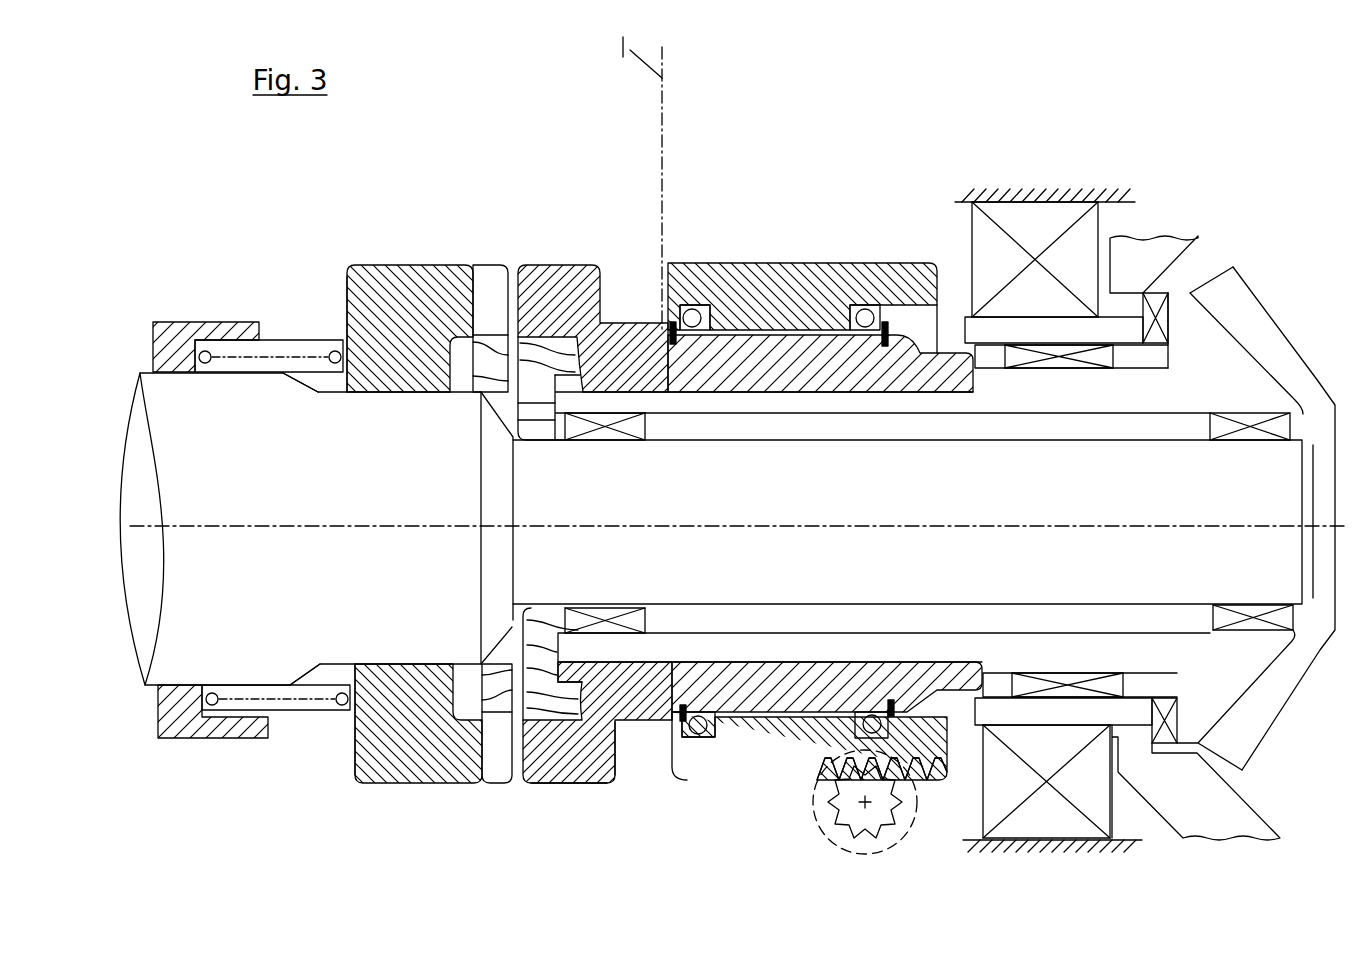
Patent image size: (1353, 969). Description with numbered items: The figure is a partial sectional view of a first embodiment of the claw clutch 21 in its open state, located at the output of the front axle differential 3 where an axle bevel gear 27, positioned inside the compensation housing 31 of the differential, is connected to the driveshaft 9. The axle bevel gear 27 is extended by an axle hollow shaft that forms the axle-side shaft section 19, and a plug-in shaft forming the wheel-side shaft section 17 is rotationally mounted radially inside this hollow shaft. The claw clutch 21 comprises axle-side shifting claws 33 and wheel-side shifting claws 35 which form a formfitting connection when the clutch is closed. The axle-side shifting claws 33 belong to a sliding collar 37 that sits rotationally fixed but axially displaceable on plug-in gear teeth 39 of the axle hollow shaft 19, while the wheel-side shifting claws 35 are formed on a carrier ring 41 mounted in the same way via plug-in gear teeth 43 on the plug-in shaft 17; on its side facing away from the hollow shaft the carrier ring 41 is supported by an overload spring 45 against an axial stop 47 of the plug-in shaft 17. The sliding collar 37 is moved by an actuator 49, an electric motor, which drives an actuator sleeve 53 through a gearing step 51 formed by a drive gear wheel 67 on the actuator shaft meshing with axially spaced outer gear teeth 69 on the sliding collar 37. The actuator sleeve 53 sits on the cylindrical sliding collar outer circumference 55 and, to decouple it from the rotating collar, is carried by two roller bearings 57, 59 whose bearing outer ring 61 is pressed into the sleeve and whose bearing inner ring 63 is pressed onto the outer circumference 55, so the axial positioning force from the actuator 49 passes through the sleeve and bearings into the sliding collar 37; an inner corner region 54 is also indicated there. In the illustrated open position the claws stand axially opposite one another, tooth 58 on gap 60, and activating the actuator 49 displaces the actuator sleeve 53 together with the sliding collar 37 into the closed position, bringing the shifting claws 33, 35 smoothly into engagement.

The front axle differential 3 is at (1345, 186).
The driveshaft of the front axle 9 is at (617, 108).
The wheel-side shaft section 17 is at (386, 460).
The axle-side shaft section 19 is at (650, 405).
The claw clutch 21 is at (470, 196).
The axle bevel gear 27 is at (1250, 287).
The compensation housing 31 is at (1185, 235).
The axle-side shifting claws 33 is at (548, 265).
The wheel-side shifting claws 35 is at (455, 265).
The sliding collar 37 is at (777, 370).
The plug-in gear teeth 39 is at (723, 394).
The carrier ring 41 is at (347, 277).
The plug-in gear teeth 43 is at (368, 394).
The overload spring 45 is at (283, 350).
The axial stop 47 is at (182, 322).
The actuator 49 is at (818, 820).
The gearing step 51 is at (820, 888).
The actuator sleeve 53 is at (803, 272).
The inner corner region 54 is at (638, 730).
The cylindrical sliding collar outer circumference 55 is at (663, 723).
The roller bearing 57 is at (748, 73).
The tooth 58 is at (572, 763).
The roller bearing 59 is at (972, 136).
The gap 60 is at (494, 760).
The bearing outer ring 61 is at (856, 306).
The bearing inner ring 63 is at (885, 318).
The drive gear wheel 67 is at (865, 827).
The outer gear teeth 69 is at (947, 780).